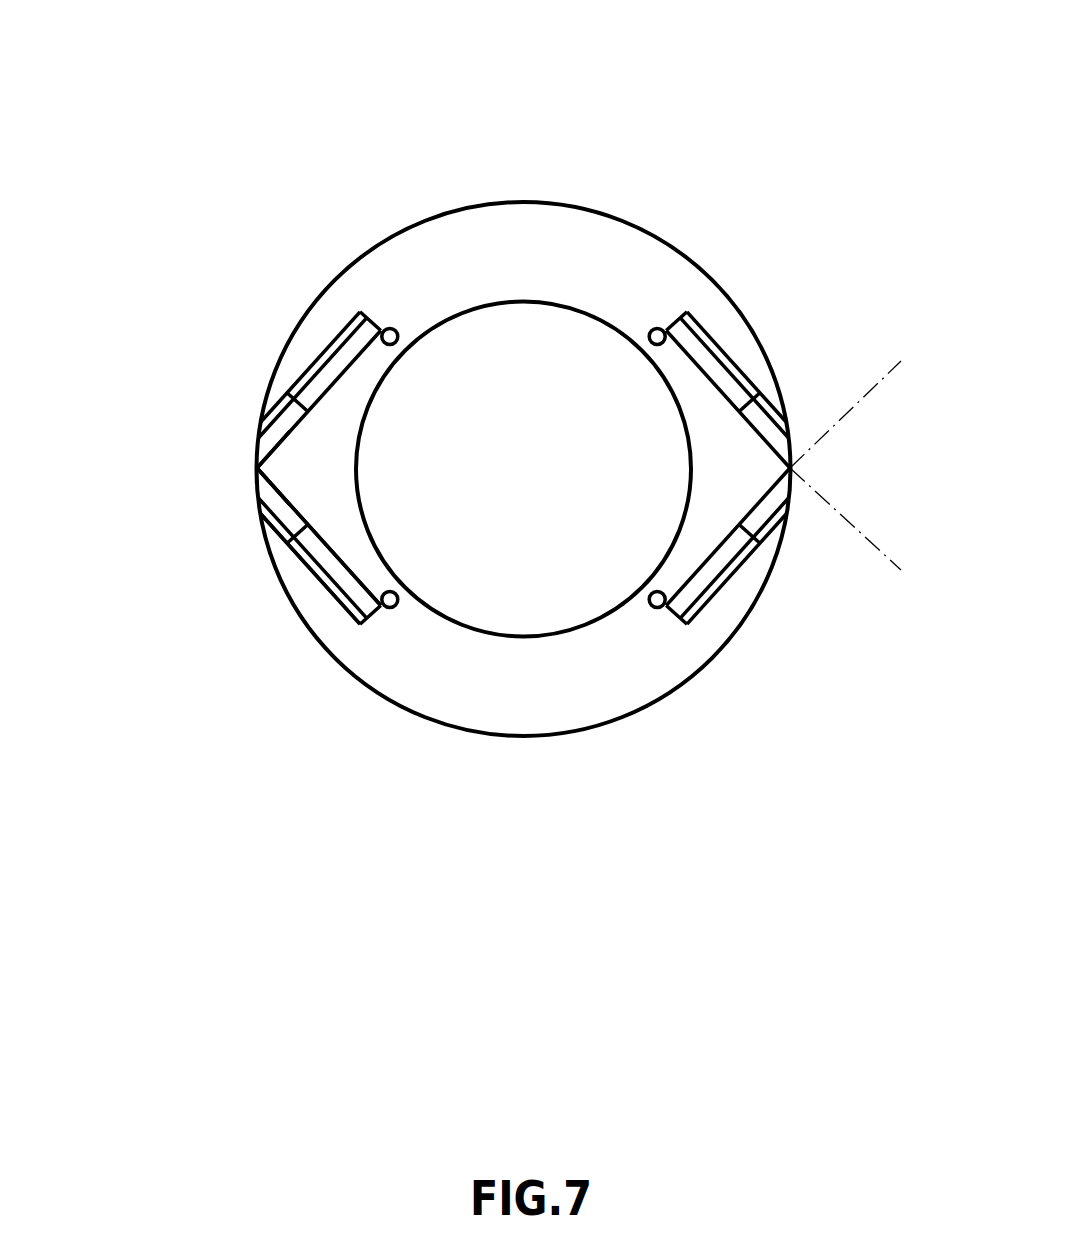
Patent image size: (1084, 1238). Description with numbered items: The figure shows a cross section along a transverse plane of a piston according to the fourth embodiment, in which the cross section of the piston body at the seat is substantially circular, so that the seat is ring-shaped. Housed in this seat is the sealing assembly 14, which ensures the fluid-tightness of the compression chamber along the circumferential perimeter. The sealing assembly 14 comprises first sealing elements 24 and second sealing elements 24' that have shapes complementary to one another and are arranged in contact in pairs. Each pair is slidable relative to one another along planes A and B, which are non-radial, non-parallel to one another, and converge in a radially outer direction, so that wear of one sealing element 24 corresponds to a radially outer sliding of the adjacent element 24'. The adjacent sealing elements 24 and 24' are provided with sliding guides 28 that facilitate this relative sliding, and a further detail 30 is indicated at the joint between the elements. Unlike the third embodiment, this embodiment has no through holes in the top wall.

The sealing assembly 14 is at (630, 206).
The second sealing element 24' is at (547, 459).
The first sealing element 24 is at (564, 583).
The sliding guide 28 is at (267, 545).
The apex connection 30 is at (290, 504).
The sliding plane A is at (852, 524).
The sliding plane B is at (850, 413).